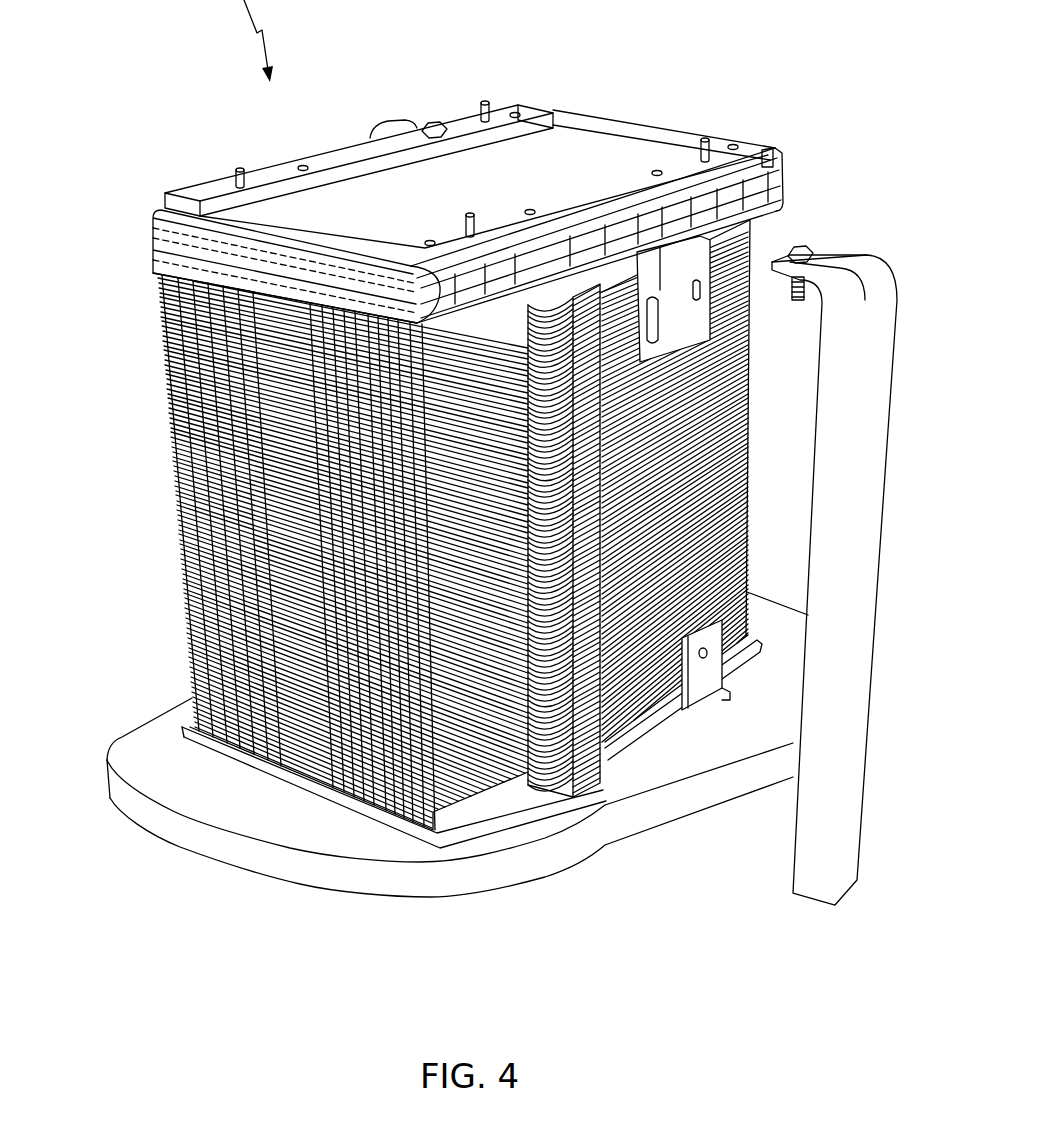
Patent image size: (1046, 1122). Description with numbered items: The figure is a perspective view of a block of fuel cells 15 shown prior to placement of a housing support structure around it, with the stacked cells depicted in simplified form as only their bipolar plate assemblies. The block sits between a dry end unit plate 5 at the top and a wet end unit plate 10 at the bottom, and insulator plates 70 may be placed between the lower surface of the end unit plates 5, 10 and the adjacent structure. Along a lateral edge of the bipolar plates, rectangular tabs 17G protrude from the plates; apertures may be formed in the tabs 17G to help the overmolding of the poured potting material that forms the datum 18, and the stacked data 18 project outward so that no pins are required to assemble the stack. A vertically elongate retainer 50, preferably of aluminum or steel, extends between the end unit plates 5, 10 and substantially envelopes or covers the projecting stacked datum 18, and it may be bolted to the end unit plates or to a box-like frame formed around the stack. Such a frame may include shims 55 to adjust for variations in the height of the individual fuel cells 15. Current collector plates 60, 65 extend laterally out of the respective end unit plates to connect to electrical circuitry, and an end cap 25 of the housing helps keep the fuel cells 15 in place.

The dry end unit plate 5 is at (150, 246).
The wet end unit plate 10 is at (142, 820).
The fuel cell 15 is at (737, 454).
The tab 17G is at (536, 778).
The datum 18 is at (590, 768).
The end cap 25 is at (188, 500).
The retainer 50 is at (403, 126).
The shim 55 is at (523, 108).
The current collector plate 60 is at (700, 316).
The current collector plate 65 is at (700, 690).
The insulator plate 70 is at (153, 278).